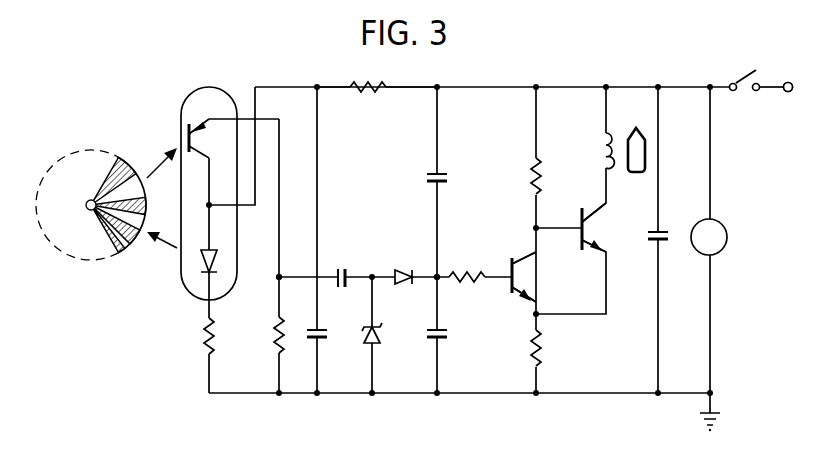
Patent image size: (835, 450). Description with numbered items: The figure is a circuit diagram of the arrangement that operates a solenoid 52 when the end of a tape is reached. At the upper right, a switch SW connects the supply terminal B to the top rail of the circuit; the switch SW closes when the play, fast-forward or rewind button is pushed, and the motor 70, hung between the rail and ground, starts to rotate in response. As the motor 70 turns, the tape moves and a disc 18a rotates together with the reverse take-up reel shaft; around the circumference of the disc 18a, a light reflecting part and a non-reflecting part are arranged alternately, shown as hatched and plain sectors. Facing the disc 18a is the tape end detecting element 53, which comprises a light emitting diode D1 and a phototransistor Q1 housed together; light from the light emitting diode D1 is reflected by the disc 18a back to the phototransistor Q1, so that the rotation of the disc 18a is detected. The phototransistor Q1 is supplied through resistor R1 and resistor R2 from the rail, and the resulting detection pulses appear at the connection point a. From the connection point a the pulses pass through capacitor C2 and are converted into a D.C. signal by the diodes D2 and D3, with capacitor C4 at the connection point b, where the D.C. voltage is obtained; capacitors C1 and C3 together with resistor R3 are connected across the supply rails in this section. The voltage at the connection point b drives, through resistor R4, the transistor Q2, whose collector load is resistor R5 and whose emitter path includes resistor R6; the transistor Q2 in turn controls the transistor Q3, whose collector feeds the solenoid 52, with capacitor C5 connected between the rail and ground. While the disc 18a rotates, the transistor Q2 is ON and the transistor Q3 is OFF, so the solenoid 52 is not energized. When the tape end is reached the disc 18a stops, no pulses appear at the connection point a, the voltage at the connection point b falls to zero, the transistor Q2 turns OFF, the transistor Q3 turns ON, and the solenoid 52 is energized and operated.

The disc 18a is at (105, 150).
The tape end detecting element 53 is at (203, 86).
The solenoid 52 is at (618, 130).
The motor 70 is at (723, 222).
The phototransistor Q1 is at (200, 121).
The light emitting diode D1 is at (217, 262).
The resistor R1 is at (197, 336).
The resistor R2 is at (260, 335).
The resistor R3 is at (377, 75).
The resistor R4 is at (467, 265).
The resistor R5 is at (549, 176).
The resistor R6 is at (549, 348).
The capacitor C1 is at (327, 335).
The coupling capacitor C2 is at (345, 266).
The capacitor C3 is at (451, 179).
The capacitor C4 is at (450, 335).
The capacitor C5 is at (646, 224).
The diode D2 is at (382, 335).
The diode D3 is at (406, 265).
The transistor Q2 is at (508, 280).
The transistor Q3 is at (579, 240).
The switch SW is at (761, 92).
The +B power supply terminal B is at (781, 74).
The connection point a is at (281, 274).
The connection point b is at (439, 274).